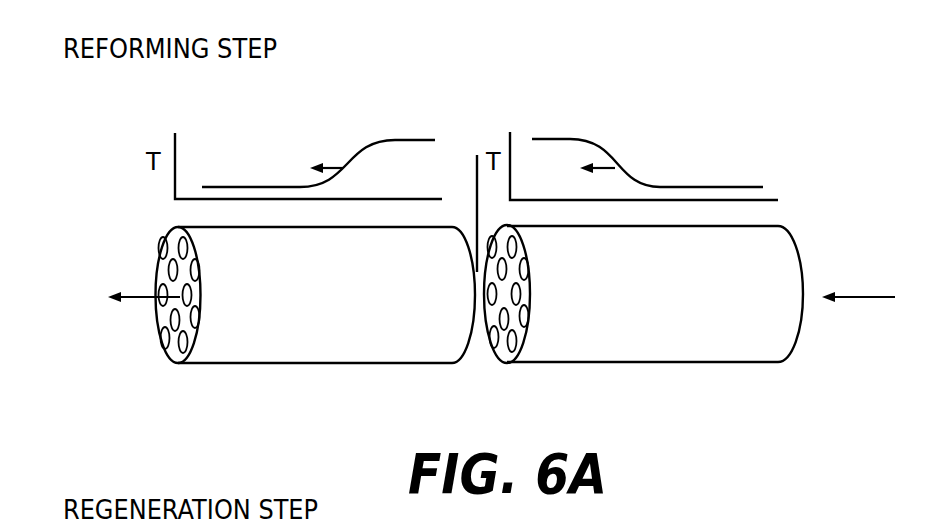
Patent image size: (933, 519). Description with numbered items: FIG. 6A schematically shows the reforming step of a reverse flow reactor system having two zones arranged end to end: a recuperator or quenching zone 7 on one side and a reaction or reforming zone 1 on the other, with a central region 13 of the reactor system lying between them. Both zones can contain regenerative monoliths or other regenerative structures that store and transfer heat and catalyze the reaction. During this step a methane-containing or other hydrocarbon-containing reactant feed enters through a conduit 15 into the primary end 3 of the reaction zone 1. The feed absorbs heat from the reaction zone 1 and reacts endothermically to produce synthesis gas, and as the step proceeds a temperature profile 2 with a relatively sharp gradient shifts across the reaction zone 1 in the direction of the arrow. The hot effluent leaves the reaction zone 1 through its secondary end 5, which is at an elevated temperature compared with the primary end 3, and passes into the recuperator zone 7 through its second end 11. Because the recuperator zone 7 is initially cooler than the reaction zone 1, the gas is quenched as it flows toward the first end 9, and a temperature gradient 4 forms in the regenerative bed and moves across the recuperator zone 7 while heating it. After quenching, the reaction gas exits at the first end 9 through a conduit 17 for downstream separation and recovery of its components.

The reaction zone 1 is at (663, 337).
The temperature profile 2 is at (615, 150).
The primary end 3 is at (787, 332).
The temperature gradient 4 is at (346, 168).
The secondary end 5 is at (498, 350).
The recuperator zone 7 is at (293, 343).
The first end 9 is at (168, 348).
The second end 11 is at (458, 337).
The central region 13 is at (472, 199).
The conduit 15 is at (858, 295).
The conduit 17 is at (143, 299).